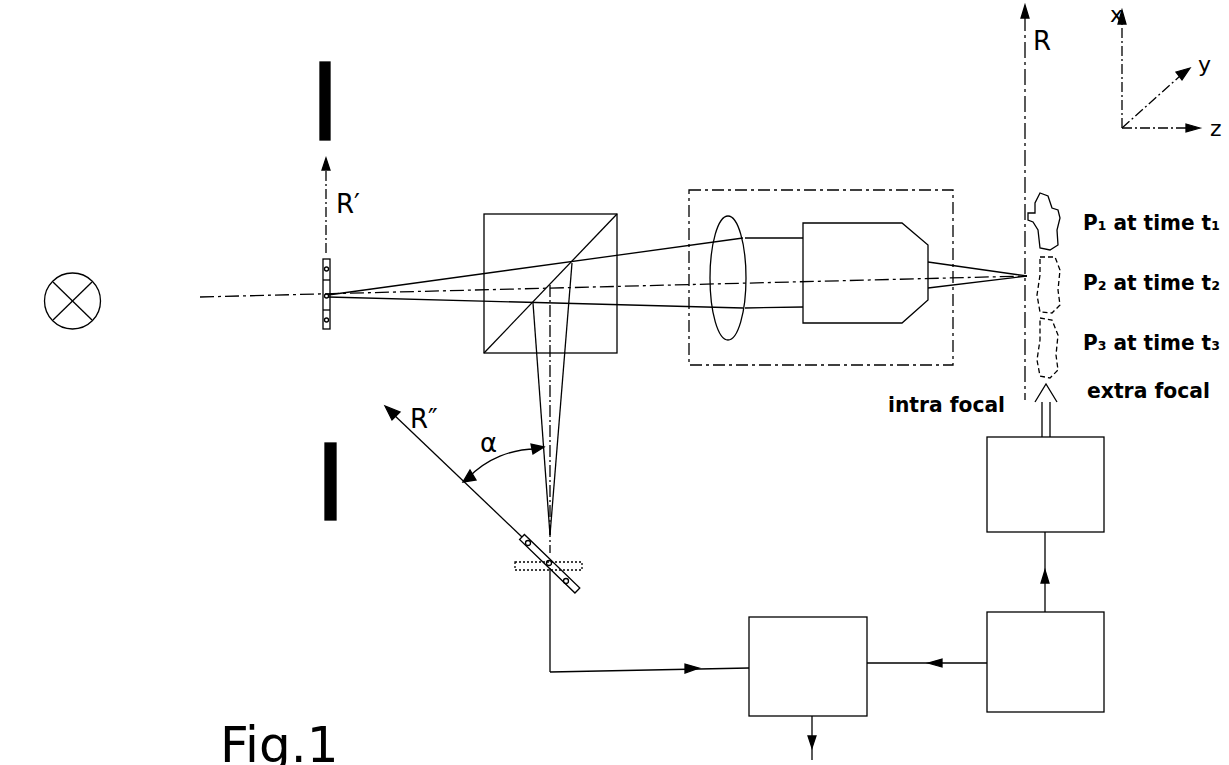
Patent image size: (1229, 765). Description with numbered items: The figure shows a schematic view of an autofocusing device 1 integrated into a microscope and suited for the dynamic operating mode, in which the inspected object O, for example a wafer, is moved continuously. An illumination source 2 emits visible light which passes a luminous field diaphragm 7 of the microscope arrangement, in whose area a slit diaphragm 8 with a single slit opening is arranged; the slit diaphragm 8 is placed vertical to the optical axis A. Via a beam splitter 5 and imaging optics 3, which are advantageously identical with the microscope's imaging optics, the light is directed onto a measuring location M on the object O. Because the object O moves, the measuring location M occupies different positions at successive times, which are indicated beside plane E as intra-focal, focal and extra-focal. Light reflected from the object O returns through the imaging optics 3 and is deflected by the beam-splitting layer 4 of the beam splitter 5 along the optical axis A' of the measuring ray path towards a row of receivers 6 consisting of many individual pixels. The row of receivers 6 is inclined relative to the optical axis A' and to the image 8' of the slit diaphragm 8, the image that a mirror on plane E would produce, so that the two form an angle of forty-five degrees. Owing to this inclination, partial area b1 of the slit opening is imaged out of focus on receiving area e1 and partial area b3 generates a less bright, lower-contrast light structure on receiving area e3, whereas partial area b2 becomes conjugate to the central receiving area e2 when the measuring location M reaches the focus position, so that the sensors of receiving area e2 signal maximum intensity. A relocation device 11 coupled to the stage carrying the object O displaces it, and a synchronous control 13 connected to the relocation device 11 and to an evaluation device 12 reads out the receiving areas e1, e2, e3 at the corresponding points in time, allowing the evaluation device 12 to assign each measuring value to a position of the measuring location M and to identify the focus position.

The autofocusing device 1 is at (668, 66).
The illumination source 2 is at (70, 280).
The imaging optics 3 is at (810, 190).
The beam-splitting layer 4 is at (597, 232).
The beam splitter 5 is at (500, 227).
The row of receivers 6 is at (581, 589).
The luminous field diaphragm 7 is at (320, 100).
The slit diaphragm 8 is at (267, 342).
The image of the slit diaphragm 8' is at (566, 530).
The relocation device 11 is at (987, 518).
The evaluation device 12 is at (818, 630).
The synchronous control 13 is at (1085, 640).
The optical axis A is at (865, 273).
The optical axis of the measuring ray path A' is at (595, 408).
The measuring location M is at (1025, 215).
The object O is at (1050, 207).
The plane E is at (1025, 356).
The partial area of the slit diaphragm b1 is at (322, 263).
The partial area of the slit diaphragm b2 is at (322, 292).
The partial area of the slit diaphragm b3 is at (322, 323).
The receiving area e1 is at (572, 582).
The central receiving area e2 is at (546, 570).
The receiving area e3 is at (524, 545).